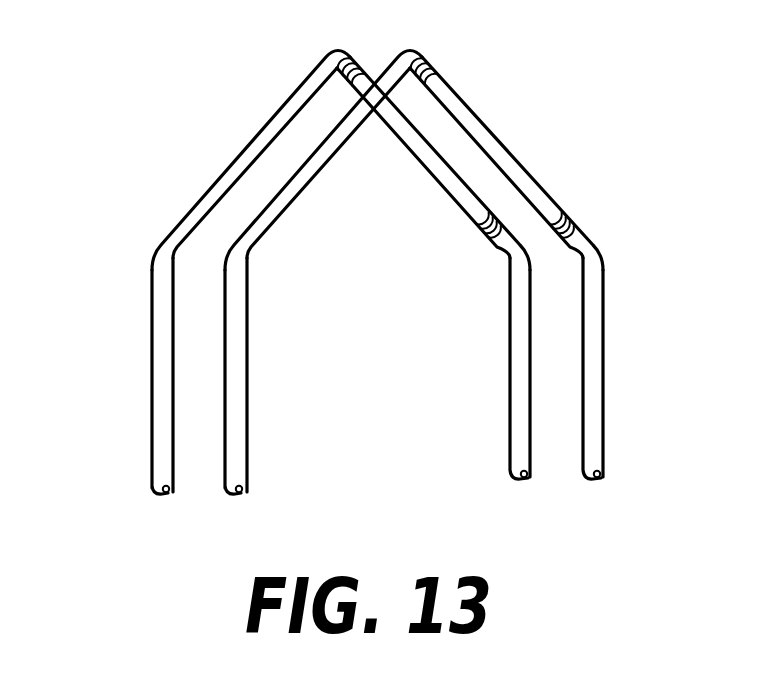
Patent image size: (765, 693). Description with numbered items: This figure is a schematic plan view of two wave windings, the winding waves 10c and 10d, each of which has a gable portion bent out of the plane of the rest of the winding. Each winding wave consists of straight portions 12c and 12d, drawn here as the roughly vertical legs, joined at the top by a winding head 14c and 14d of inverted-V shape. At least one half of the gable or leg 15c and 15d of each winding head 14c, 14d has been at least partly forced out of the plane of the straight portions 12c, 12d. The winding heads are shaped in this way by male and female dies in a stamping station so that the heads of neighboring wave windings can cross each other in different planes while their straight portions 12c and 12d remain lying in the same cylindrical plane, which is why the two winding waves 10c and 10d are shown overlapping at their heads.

The winding wave 10c is at (152, 433).
The winding wave 10d is at (603, 440).
The straight portions 12c is at (316, 273).
The straight portions 12d is at (425, 273).
The winding head 14c is at (259, 127).
The winding head 14d is at (266, 205).
The gable or leg 15c is at (448, 157).
The gable or leg 15d is at (543, 182).